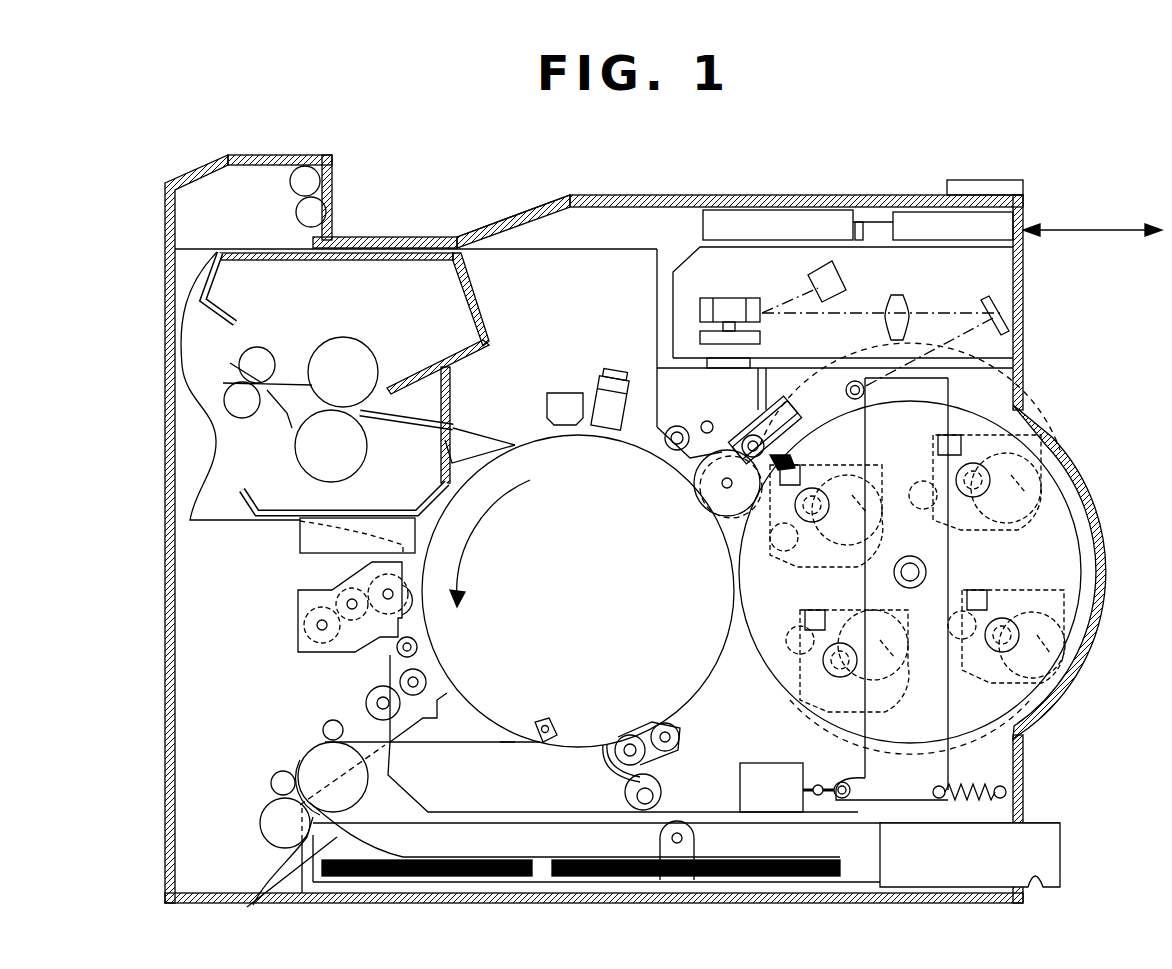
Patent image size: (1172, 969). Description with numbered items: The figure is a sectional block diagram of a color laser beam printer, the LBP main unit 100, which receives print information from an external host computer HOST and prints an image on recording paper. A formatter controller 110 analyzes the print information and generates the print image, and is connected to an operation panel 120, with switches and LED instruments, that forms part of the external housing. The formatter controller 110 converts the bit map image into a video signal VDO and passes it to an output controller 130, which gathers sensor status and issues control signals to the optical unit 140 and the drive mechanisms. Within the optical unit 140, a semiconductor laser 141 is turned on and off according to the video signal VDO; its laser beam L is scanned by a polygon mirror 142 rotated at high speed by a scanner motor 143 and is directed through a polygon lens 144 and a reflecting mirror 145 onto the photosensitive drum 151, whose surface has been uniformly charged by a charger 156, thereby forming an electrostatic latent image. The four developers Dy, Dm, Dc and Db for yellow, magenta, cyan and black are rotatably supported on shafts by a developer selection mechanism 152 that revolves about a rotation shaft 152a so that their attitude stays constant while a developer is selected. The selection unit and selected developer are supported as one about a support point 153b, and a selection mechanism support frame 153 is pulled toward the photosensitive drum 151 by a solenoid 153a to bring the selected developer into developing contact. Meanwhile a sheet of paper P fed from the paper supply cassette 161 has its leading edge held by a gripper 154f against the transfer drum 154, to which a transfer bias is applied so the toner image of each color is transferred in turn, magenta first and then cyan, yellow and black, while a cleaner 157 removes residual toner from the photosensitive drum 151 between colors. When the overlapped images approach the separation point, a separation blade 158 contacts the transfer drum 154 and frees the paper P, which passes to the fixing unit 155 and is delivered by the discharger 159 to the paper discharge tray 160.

The LBP main unit 100 is at (650, 182).
The formatter controller 110 is at (915, 228).
The operation panel 120 is at (1010, 188).
The output controller 130 is at (740, 218).
The optical unit 140 is at (688, 262).
The semiconductor laser 141 is at (828, 268).
The polygon mirror 142 is at (735, 297).
The scanner motor 143 is at (700, 337).
The polygon lens 144 is at (905, 335).
The reflecting mirror 145 is at (1010, 317).
The photosensitive drum 151 is at (700, 505).
The developer selection mechanism 152 is at (1060, 518).
The rotation shaft 152a is at (925, 572).
The selection mechanism support frame 153 is at (937, 768).
The solenoid 153a is at (755, 785).
The support point 153b is at (853, 382).
The transfer drum 154 is at (687, 663).
The gripper 154f is at (548, 722).
The fixing unit 155 is at (215, 440).
The charger 156 is at (780, 420).
The cleaner 157 is at (702, 424).
The separation blade 158 is at (492, 435).
The discharger 159 is at (322, 190).
The paper discharge tray 160 is at (435, 242).
The paper supply cassette 161 is at (1030, 855).
The yellow developer Dy is at (852, 470).
The cyan developer Dc is at (1040, 440).
The black developer Db is at (808, 628).
The magenta developer Dm is at (1050, 638).
The laser beam L is at (963, 310).
The sheet of paper P is at (247, 912).
The video signal VDO is at (855, 273).
The host computer HOST is at (1092, 218).